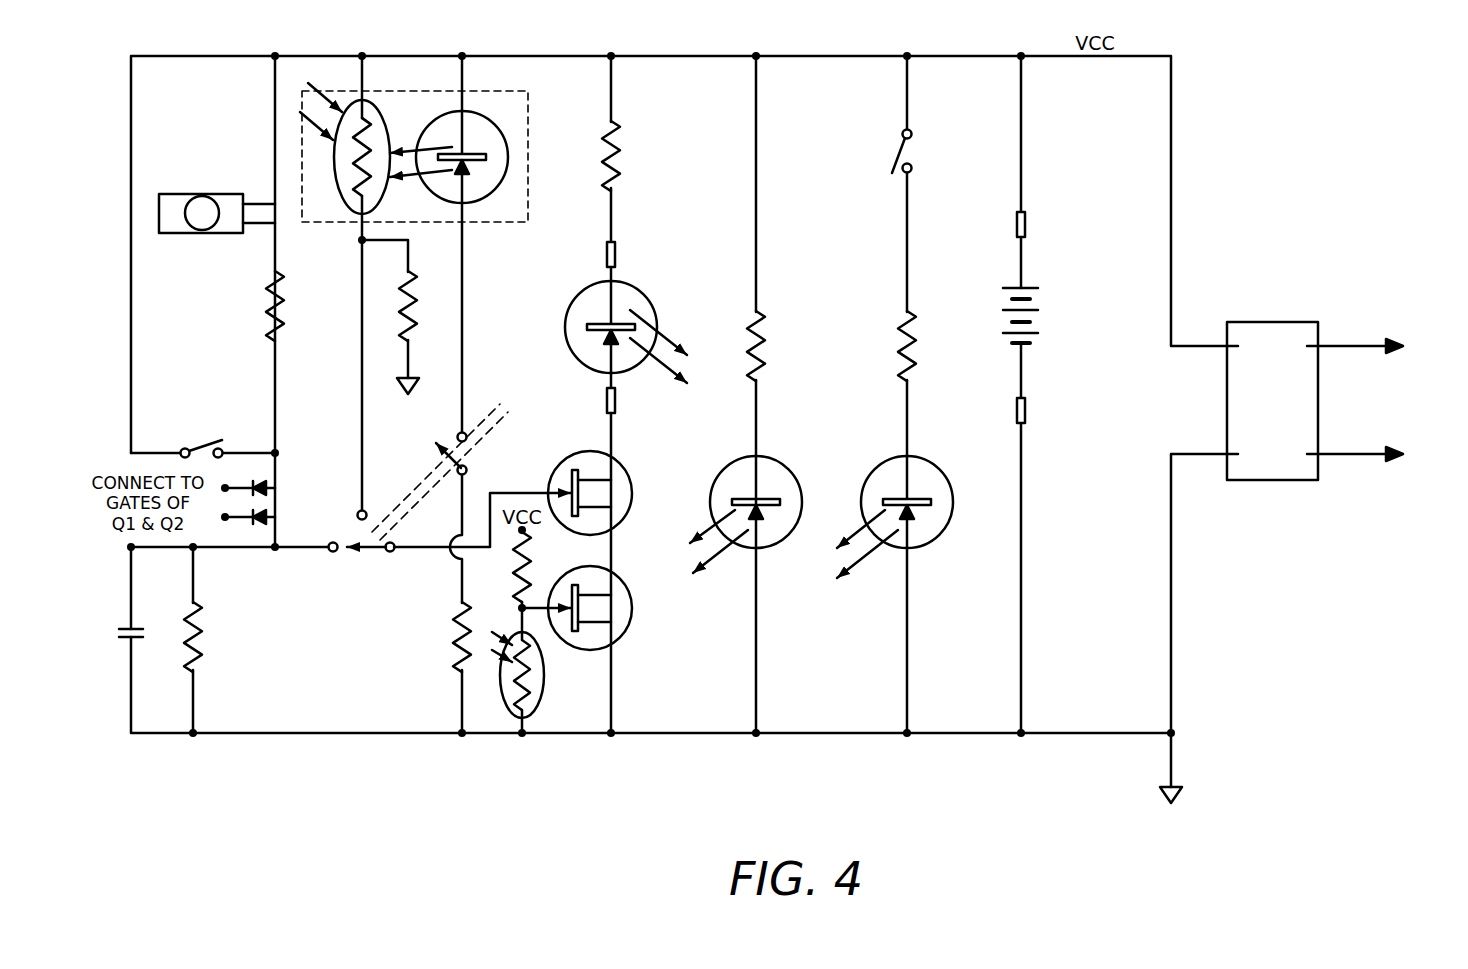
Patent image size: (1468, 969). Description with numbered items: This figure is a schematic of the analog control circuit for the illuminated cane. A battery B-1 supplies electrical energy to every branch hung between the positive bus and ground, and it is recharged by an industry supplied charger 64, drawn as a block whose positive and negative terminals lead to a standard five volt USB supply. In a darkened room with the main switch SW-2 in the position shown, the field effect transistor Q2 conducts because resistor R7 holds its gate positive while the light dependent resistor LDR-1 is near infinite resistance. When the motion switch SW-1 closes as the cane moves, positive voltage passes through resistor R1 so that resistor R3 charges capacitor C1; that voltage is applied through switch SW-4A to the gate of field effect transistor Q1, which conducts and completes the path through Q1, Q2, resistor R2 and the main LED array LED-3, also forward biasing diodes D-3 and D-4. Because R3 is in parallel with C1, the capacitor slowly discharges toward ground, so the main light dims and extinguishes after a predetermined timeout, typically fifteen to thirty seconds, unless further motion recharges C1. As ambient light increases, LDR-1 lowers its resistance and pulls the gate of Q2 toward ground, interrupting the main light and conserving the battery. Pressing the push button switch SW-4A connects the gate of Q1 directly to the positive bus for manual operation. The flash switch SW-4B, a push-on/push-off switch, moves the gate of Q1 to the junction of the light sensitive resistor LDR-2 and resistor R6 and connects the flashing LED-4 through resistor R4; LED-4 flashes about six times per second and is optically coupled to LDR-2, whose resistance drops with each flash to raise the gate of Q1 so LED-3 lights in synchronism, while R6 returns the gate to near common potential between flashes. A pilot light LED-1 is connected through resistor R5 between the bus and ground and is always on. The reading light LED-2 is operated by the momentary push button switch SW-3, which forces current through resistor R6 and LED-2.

The charger 64 is at (1272, 322).
The motion switch SW-1 is at (217, 231).
The resistor R1 is at (260, 306).
The main switch SW-2 is at (203, 436).
The diode D-3 is at (271, 488).
The diode D-4 is at (271, 517).
The capacitor C1 is at (115, 633).
The resistor R3 is at (211, 637).
The push button switch SW-4A is at (362, 565).
The flash switch SW-4B is at (484, 454).
The light sensitive resistor LDR-2 is at (339, 167).
The resistor R6 is at (662, 326).
The resistor R4 is at (446, 637).
The flashing LED LED-4 is at (416, 142).
The resistor R2 is at (596, 156).
The pilot light LED-1 is at (712, 407).
The main LED array LED-3 is at (626, 347).
The field effect transistor Q1 is at (596, 500).
The field effect transistor Q2 is at (583, 615).
The resistor R7 is at (508, 567).
The light dependent resistor LDR-1 is at (545, 680).
The resistor R5 is at (772, 346).
The momentary push button switch SW-3 is at (933, 152).
The reading light LED-2 is at (903, 503).
The battery B-1 is at (1035, 317).